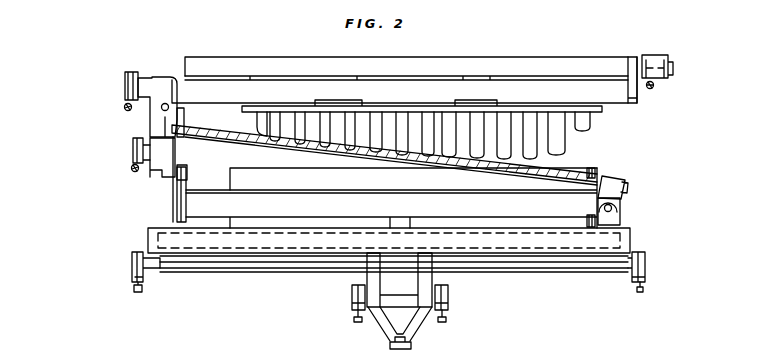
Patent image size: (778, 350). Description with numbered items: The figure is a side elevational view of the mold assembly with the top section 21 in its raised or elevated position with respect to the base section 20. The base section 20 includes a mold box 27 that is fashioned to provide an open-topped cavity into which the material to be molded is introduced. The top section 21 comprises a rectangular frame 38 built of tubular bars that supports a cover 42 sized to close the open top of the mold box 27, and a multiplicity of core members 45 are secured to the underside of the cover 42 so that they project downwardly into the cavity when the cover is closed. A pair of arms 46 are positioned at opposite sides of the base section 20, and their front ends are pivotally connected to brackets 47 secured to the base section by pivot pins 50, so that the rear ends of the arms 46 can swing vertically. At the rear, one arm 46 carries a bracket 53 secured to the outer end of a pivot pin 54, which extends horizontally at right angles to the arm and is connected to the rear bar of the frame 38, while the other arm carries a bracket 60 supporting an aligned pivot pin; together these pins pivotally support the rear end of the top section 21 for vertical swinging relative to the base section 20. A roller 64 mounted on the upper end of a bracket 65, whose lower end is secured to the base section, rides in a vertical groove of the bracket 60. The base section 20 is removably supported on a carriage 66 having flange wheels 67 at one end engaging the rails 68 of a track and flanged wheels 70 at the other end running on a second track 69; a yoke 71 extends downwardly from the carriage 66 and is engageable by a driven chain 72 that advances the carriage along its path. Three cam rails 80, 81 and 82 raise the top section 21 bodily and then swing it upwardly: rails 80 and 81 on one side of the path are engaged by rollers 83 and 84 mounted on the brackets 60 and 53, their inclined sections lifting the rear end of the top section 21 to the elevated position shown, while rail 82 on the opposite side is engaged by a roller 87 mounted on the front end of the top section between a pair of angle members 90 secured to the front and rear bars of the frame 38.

The base section 20 is at (387, 210).
The top section 21 is at (528, 57).
The mold box 27 is at (249, 172).
The rectangular frame 38 is at (289, 93).
The cover 42 is at (602, 112).
The core members 45 is at (583, 131).
The arms 46 is at (560, 181).
The brackets 47 is at (614, 183).
The pivot pin 50 is at (613, 208).
The bracket 53 is at (160, 80).
The pivot pin 54 is at (185, 112).
The bracket 60 is at (178, 152).
The roller 64 is at (178, 182).
The bracket 65 is at (188, 177).
The carriage 66 is at (637, 240).
The flange wheels 67 is at (647, 264).
The rails 68 is at (646, 289).
The second track 69 is at (447, 319).
The flanged wheels 70 is at (356, 296).
The yoke 71 is at (388, 318).
The chain 72 is at (412, 345).
The cam rail 80 is at (134, 172).
The cam rail 81 is at (124, 107).
The cam rail 82 is at (654, 87).
The roller 83 is at (132, 152).
The roller 84 is at (130, 71).
The roller 87 is at (666, 58).
The angle members 90 is at (601, 63).